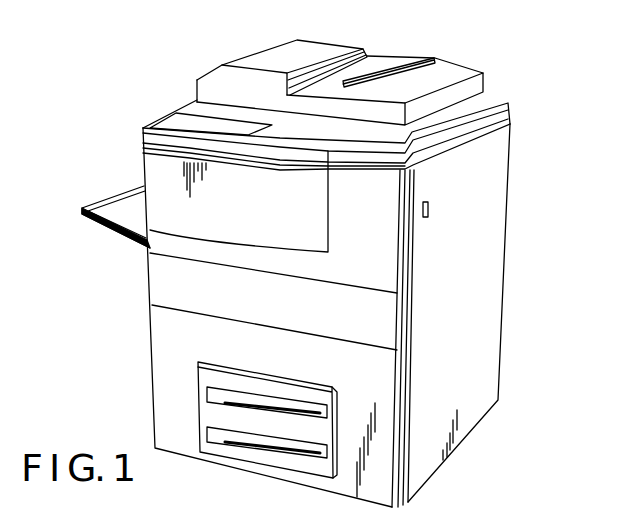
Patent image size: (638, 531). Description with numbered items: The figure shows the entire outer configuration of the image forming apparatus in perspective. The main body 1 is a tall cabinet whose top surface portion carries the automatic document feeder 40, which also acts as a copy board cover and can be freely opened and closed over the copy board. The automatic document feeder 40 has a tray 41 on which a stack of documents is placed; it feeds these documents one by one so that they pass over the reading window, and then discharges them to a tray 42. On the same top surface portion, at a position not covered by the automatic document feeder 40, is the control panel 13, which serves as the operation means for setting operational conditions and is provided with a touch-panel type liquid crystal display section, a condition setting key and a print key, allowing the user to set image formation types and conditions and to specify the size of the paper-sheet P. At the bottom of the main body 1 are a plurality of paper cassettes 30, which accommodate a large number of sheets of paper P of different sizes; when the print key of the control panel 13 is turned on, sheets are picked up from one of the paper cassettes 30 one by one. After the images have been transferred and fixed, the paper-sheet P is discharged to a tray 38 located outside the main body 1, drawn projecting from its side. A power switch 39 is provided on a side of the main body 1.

The main body 1 is at (511, 150).
The control panel 13 is at (173, 123).
The paper cassettes 30 is at (202, 388).
The tray 38 is at (110, 225).
The power switch 39 is at (428, 207).
The automatic document feeder 40 is at (363, 49).
The tray 41 is at (410, 57).
The tray 42 is at (450, 72).
The paper-sheet P is at (120, 210).